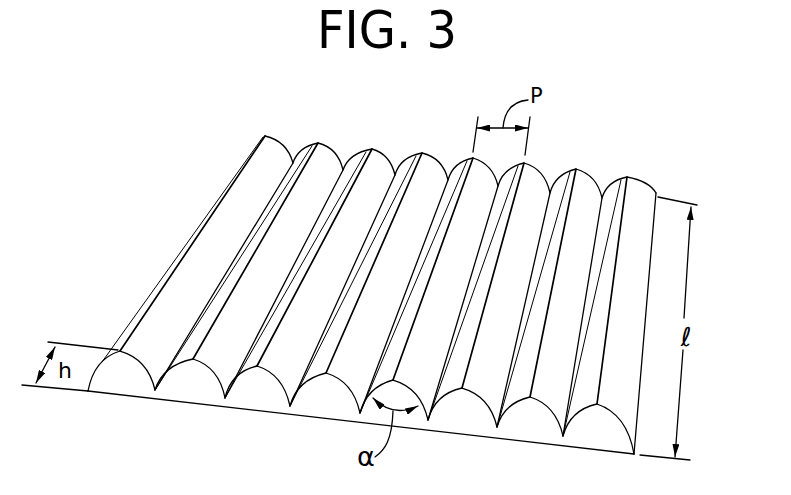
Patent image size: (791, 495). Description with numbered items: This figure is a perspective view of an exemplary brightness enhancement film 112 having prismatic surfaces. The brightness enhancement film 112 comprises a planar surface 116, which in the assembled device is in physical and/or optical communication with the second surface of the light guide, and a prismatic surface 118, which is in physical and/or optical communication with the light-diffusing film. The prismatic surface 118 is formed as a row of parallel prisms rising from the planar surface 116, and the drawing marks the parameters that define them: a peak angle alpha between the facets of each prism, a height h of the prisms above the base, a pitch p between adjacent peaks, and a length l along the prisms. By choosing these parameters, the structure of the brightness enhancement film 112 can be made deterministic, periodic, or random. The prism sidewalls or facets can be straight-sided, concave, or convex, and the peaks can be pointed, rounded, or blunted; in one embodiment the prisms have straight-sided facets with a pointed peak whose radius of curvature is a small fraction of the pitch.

The brightness enhancement film 112 is at (190, 180).
The planar surface 116 is at (318, 417).
The prismatic surface 118 is at (638, 190).